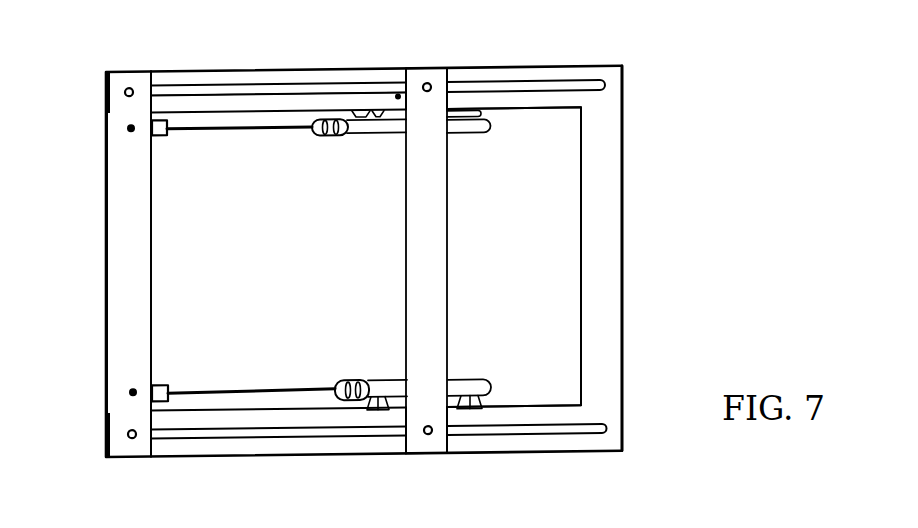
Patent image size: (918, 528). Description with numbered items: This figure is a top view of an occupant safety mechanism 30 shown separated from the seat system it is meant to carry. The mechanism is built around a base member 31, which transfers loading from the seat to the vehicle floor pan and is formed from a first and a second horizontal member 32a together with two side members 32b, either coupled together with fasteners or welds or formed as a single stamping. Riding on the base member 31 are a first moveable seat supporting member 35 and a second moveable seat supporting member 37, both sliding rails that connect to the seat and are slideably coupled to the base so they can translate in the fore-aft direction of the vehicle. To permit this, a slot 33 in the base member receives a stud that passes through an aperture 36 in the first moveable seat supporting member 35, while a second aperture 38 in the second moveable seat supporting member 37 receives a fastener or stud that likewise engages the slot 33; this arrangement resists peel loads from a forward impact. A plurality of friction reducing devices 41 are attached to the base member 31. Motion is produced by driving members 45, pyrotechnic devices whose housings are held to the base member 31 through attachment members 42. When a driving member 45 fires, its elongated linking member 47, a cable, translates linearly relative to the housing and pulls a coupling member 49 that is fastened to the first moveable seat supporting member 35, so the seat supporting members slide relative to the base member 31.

The occupant safety mechanism 30 is at (708, 238).
The base member 31 is at (606, 331).
The horizontal member 32a is at (481, 74).
The side member 32b is at (124, 313).
The slot 33 is at (222, 58).
The first moveable seat supporting member 35 is at (117, 230).
The aperture 36 is at (124, 90).
The second moveable seat supporting member 37 is at (432, 268).
The aperture 38 is at (420, 80).
The friction reducing device 41 is at (117, 53).
The attachment member 42 is at (482, 112).
The driving member 45 is at (372, 128).
The elongated linking member 47 is at (223, 136).
The coupling member 49 is at (156, 137).